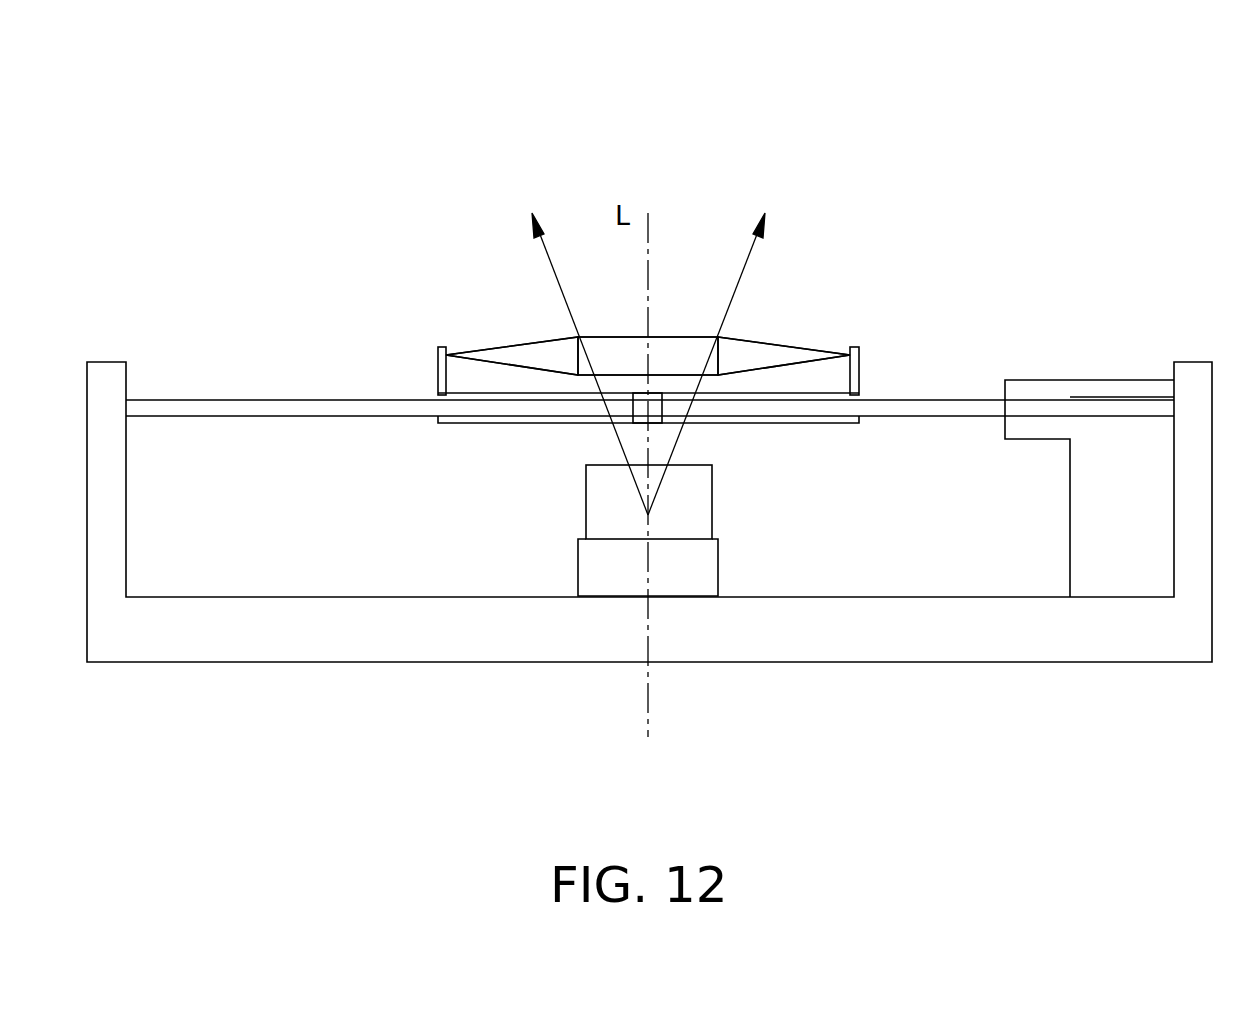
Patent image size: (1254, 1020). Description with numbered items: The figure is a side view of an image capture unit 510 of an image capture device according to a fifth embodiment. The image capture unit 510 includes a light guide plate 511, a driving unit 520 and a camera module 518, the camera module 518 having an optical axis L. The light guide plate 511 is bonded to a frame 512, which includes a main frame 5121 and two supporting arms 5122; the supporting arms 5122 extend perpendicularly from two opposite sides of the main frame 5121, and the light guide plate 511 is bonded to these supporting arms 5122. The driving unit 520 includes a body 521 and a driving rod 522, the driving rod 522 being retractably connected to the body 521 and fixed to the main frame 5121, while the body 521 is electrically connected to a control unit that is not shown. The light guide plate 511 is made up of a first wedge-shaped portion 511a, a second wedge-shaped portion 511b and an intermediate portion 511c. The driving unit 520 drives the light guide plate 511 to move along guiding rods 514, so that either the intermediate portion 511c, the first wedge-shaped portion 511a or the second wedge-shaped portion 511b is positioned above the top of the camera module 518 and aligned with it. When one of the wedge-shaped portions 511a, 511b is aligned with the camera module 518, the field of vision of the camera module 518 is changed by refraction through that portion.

The image capture unit 510 is at (851, 123).
The light guide plate 511 is at (629, 299).
The first wedge-shaped portion 511a is at (462, 353).
The second wedge-shaped portion 511b is at (822, 350).
The intermediate portion 511c is at (675, 350).
The frame 512 is at (495, 557).
The main frame 5121 is at (463, 420).
The supporting arms 5122 is at (443, 370).
The guiding rods 514 is at (275, 408).
The camera module 518 is at (698, 506).
The driving unit 520 is at (1098, 423).
The body 521 is at (1095, 390).
The driving rod 522 is at (970, 400).